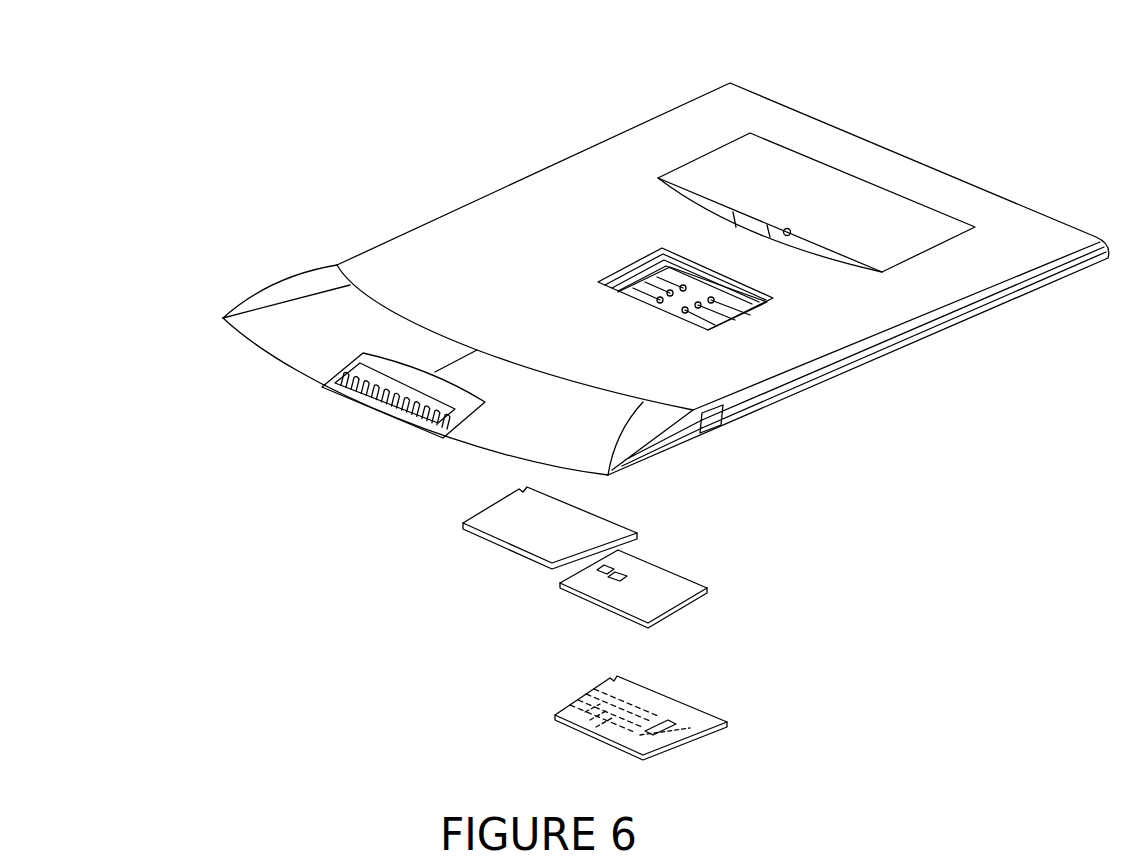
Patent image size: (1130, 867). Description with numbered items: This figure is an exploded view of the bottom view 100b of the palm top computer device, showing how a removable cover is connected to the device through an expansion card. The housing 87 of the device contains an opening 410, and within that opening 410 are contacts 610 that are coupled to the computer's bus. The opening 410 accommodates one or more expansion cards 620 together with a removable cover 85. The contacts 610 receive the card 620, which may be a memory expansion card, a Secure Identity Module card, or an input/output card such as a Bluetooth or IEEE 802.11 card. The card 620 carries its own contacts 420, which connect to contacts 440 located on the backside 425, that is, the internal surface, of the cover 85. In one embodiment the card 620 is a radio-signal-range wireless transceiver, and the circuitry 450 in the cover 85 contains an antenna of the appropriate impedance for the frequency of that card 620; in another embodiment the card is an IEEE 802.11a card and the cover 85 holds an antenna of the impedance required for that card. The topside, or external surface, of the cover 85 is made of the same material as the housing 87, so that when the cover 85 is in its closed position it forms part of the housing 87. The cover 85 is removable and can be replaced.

The bottom view 100b is at (97, 63).
The housing 87 is at (437, 291).
The contacts 610 is at (640, 293).
The opening 410 is at (753, 308).
The cover 85 is at (545, 538).
The expansion card 620 is at (670, 596).
The card contacts 420 is at (597, 580).
The backside of cover 425 is at (551, 711).
The circuitry 450 is at (583, 713).
The cover contacts 440 is at (677, 727).